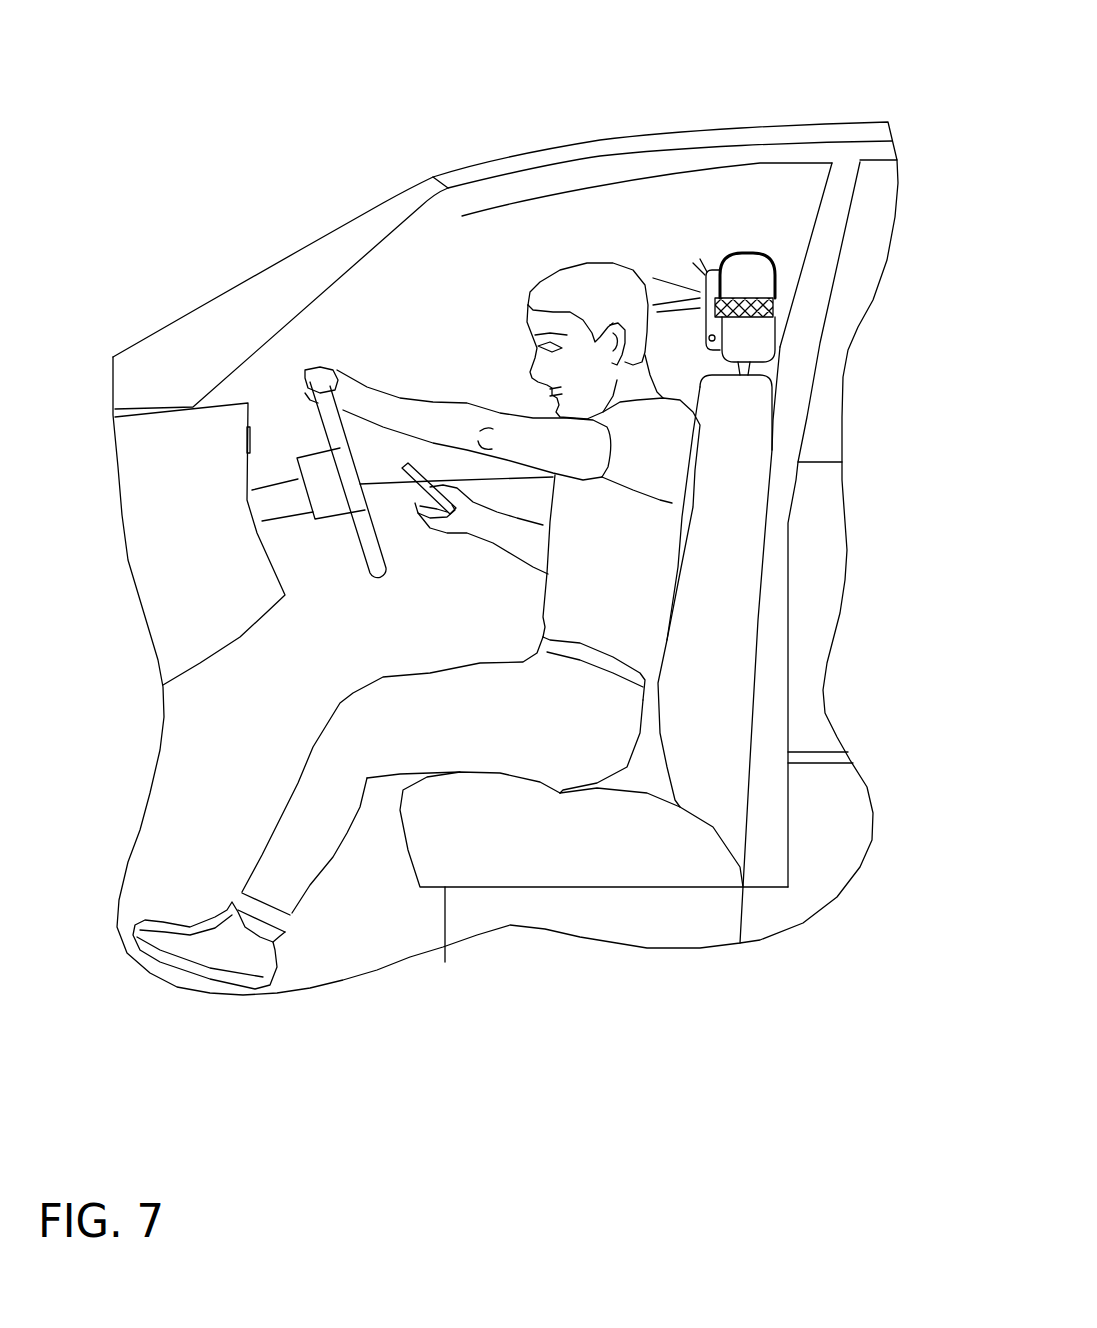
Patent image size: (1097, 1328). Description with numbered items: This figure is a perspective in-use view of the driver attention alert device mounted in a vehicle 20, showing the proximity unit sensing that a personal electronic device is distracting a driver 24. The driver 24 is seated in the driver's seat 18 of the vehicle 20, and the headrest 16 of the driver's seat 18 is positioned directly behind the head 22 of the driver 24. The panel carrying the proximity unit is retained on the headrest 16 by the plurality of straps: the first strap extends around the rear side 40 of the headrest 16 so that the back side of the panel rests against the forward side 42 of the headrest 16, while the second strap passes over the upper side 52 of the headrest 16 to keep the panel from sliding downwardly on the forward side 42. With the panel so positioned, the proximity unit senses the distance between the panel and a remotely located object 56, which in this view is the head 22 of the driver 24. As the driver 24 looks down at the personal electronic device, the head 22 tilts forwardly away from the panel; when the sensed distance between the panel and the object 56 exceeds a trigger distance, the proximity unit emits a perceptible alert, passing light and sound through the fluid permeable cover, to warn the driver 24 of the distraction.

The vehicle 20 is at (833, 112).
The driver 24 is at (437, 357).
The object 56 is at (515, 268).
The head 22 is at (571, 262).
The driver's seat 18 is at (689, 356).
The rear side 40 is at (775, 333).
The headrest 16 is at (757, 273).
The upper side 52 is at (745, 256).
The forward side 42 is at (715, 266).